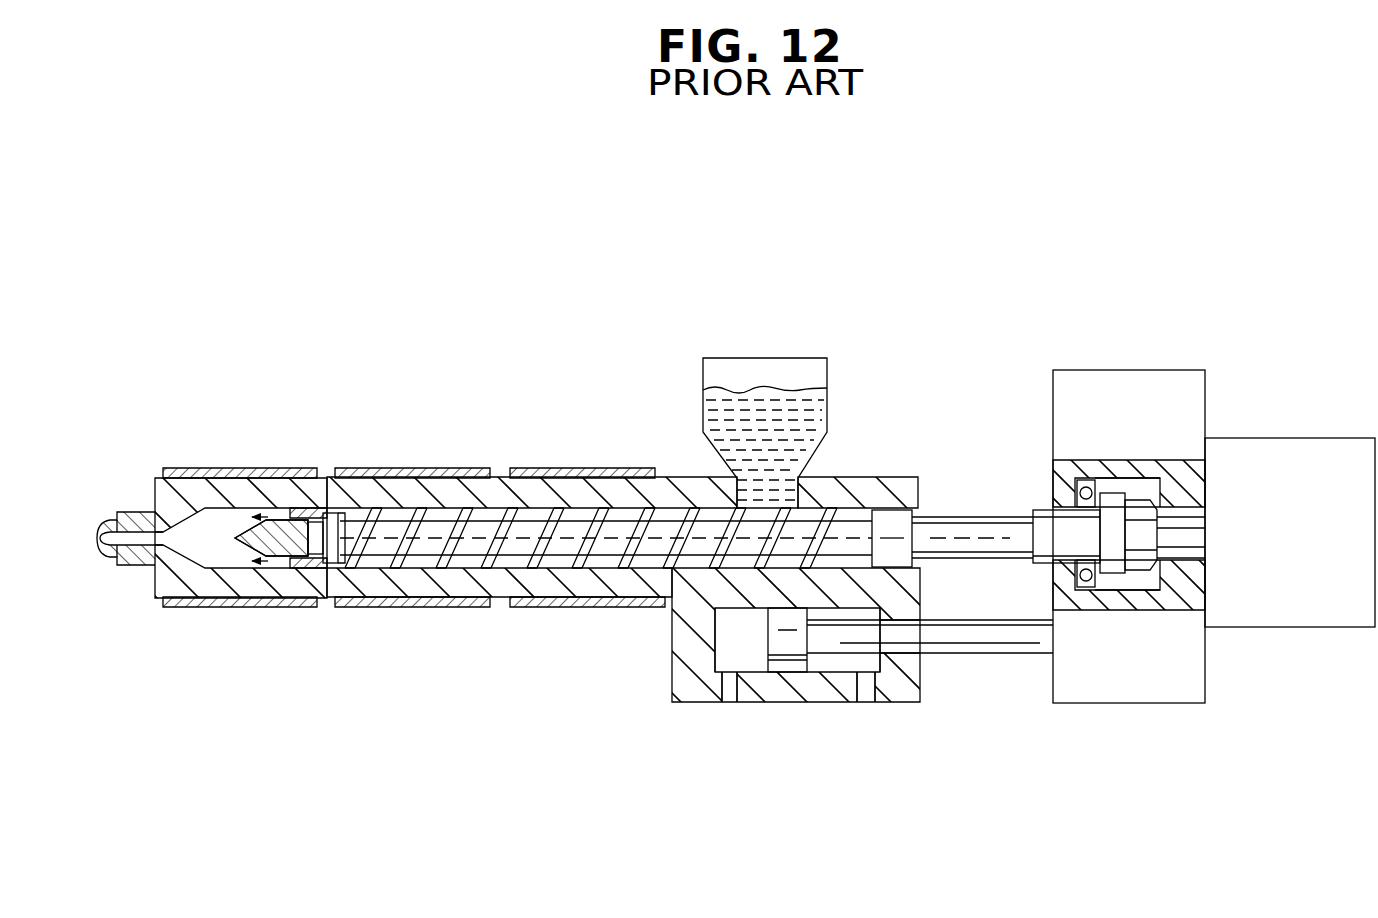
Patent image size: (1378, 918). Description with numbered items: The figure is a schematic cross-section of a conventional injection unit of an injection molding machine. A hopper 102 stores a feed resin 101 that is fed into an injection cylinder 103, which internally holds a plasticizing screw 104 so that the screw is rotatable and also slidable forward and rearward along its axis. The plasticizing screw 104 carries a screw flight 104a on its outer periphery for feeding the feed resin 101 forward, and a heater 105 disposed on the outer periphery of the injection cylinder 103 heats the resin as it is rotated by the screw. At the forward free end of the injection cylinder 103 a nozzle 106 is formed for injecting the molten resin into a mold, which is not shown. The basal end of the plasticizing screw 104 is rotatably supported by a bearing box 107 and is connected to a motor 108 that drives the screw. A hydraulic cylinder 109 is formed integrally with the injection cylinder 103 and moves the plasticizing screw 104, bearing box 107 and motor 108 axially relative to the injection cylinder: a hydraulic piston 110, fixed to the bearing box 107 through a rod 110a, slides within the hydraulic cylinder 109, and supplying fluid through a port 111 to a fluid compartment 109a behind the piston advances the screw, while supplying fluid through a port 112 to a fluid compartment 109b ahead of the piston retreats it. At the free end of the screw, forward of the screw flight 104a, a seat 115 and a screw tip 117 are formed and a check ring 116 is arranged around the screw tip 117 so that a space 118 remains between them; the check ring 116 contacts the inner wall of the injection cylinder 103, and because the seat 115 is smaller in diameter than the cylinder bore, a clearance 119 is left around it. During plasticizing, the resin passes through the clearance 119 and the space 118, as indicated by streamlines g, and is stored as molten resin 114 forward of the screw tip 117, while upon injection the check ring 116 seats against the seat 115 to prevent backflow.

The feed resin 101 is at (753, 408).
The hopper 102 is at (828, 410).
The injection cylinder 103 is at (497, 480).
The plasticizing screw 104 is at (512, 548).
The screw flight 104a is at (680, 510).
The heater 105 is at (590, 480).
The nozzle 106 is at (108, 514).
The bearing box 107 is at (1153, 380).
The motor 108 is at (1308, 450).
The hydraulic cylinder 109 is at (752, 675).
The fluid compartment 109a is at (887, 663).
The fluid compartment 109b is at (728, 637).
The hydraulic piston 110 is at (792, 655).
The rod 110a is at (998, 638).
The port 111 is at (865, 690).
The port 112 is at (730, 685).
The molten resin 114 is at (222, 525).
The seat 115 is at (352, 522).
The check ring 116 is at (318, 507).
The screw tip 117 is at (236, 535).
The space 118 is at (300, 560).
The clearance 119 is at (338, 562).
The streamlines g is at (270, 510).